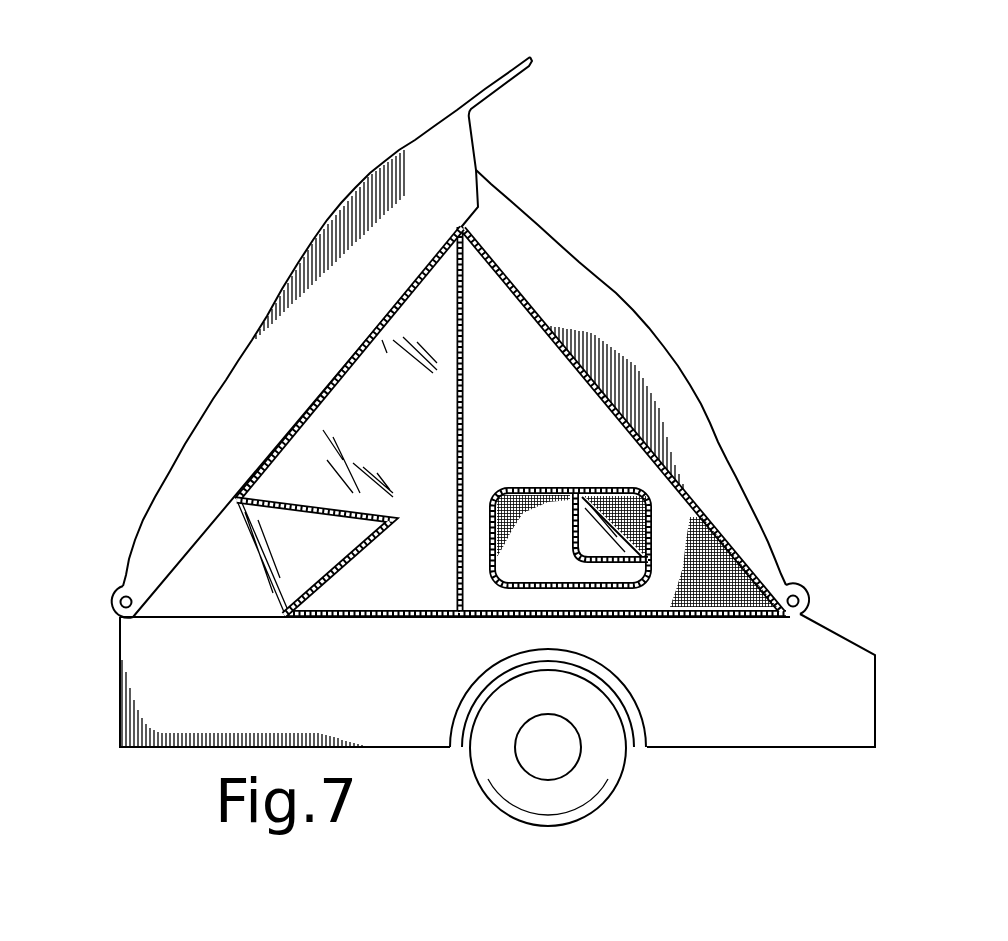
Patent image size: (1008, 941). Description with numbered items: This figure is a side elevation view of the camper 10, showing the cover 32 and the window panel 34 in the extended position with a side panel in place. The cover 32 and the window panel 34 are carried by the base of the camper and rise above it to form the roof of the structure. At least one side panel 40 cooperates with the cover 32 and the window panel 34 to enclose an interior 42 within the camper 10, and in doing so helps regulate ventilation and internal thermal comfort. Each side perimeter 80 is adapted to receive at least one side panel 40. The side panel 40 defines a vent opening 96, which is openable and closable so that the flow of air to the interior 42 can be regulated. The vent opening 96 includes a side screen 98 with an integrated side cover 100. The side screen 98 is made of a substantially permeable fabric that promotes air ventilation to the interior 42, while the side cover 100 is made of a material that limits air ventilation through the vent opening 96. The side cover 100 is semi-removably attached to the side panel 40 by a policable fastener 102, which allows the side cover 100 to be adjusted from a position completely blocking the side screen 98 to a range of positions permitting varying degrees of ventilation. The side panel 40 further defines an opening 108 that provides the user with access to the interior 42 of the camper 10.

The camper 10 is at (367, 141).
The cover 32 is at (208, 405).
The window panel 34 is at (748, 490).
The side panel 40 is at (528, 403).
The interior 42 is at (238, 578).
The side perimeter 80 is at (200, 528).
The vent opening 96 is at (648, 573).
The side screen 98 is at (618, 527).
The side cover 100 is at (597, 543).
The policable fastener 102 is at (575, 522).
The opening 108 is at (219, 605).